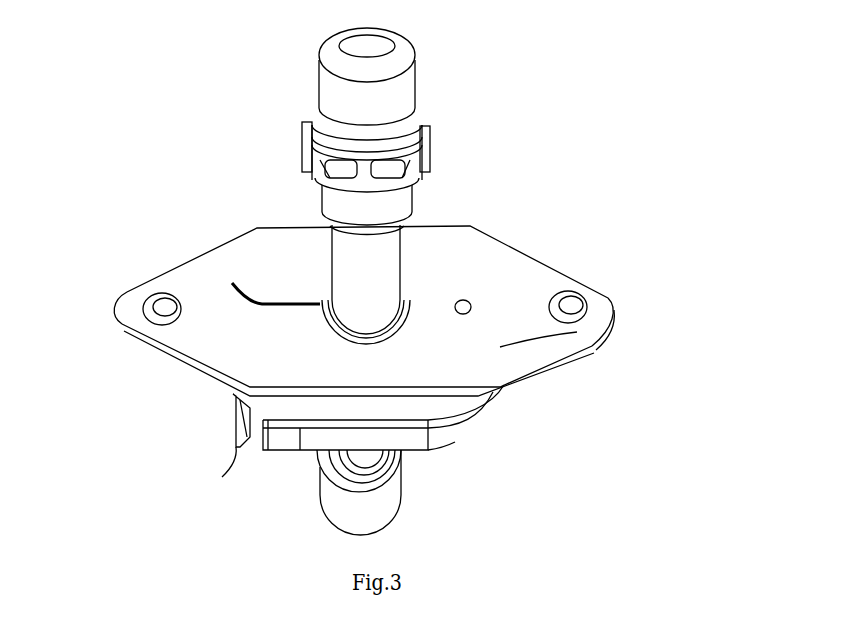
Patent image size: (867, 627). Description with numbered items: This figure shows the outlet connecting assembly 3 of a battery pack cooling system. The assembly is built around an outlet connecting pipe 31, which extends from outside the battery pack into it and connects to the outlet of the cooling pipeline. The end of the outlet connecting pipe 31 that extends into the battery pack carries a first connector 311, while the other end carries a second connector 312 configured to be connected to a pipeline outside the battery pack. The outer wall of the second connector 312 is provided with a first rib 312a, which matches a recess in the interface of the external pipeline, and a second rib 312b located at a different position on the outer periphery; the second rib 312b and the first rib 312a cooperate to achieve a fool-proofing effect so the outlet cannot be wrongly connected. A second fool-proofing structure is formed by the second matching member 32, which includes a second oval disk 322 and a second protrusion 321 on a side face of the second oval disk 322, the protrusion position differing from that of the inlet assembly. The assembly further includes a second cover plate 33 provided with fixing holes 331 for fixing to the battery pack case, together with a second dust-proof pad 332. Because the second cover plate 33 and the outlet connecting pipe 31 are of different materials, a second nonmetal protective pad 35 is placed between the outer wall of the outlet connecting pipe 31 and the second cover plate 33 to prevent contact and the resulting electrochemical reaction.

The outlet connecting assembly 3 is at (668, 97).
The outlet connecting pipe 31 is at (377, 250).
The first connector 311 is at (378, 503).
The second connector 312 is at (428, 148).
The first rib 312a is at (433, 117).
The second rib 312b is at (302, 125).
The second matching member 32 is at (158, 538).
The second protrusion 321 is at (222, 477).
The second oval disk 322 is at (317, 455).
The second cover plate 33 is at (593, 348).
The fixing holes 331 is at (120, 302).
The second dust-proof pad 332 is at (200, 372).
The second nonmetal protective pad 35 is at (231, 283).